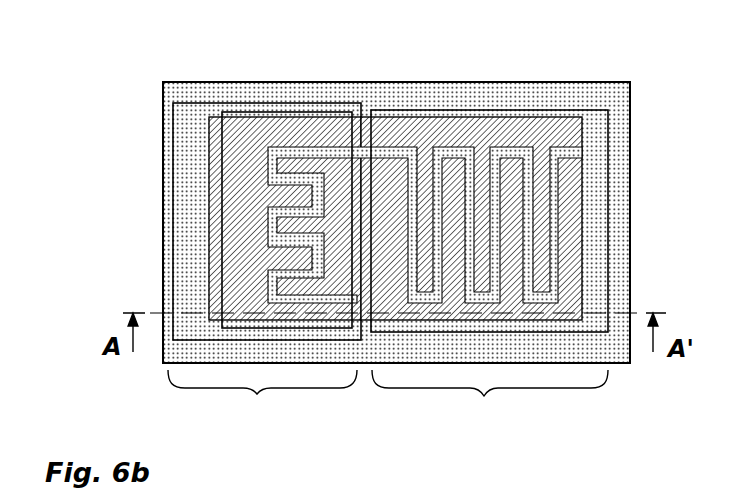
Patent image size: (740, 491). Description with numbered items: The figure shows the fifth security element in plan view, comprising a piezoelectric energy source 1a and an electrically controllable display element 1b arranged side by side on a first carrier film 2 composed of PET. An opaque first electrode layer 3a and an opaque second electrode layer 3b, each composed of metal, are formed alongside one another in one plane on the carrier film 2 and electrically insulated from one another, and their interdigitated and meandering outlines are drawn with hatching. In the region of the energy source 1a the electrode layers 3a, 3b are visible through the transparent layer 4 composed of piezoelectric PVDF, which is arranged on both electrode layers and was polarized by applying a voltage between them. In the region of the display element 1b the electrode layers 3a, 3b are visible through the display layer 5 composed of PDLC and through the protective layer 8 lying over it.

The piezoelectric energy source 1a is at (490, 400).
The electrically controllable display element 1b is at (262, 400).
The first carrier film 2 is at (394, 82).
The first electrode layer 3a is at (210, 211).
The second electrode layer 3b is at (573, 218).
The transparent layer 4 is at (473, 109).
The display layer 5 is at (258, 111).
The protective layer 8 is at (197, 103).